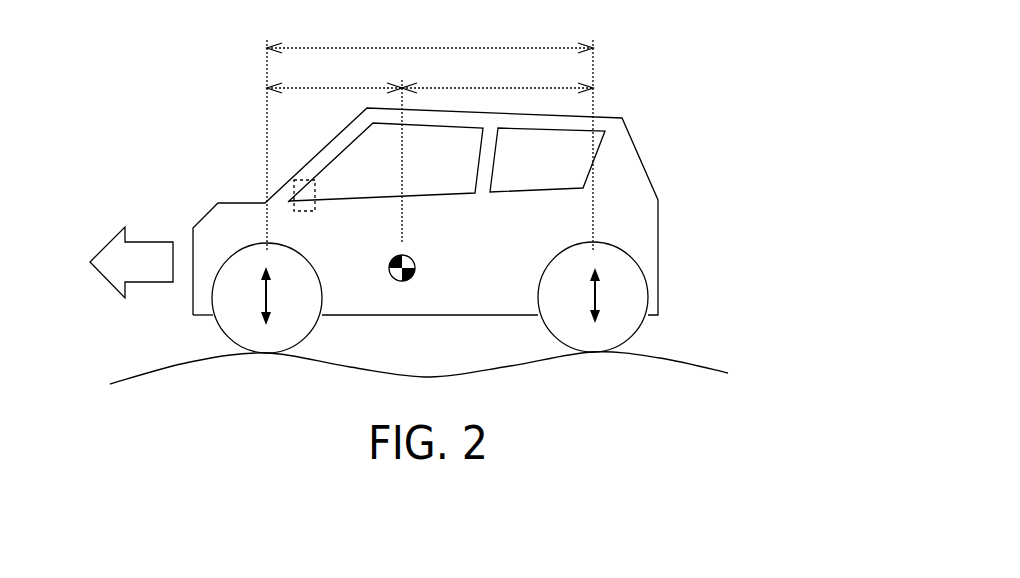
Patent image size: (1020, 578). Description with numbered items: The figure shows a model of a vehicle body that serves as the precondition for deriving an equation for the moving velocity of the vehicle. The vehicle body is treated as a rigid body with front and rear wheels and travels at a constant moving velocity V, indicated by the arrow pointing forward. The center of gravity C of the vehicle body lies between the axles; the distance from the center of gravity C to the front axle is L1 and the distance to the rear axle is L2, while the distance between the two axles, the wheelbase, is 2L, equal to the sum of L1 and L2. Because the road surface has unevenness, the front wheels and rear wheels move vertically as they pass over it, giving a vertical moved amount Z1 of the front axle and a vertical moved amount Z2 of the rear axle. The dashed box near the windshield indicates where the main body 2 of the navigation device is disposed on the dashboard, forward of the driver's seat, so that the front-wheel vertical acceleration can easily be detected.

The main body 2 is at (303, 164).
The center of gravity C is at (425, 263).
The moving velocity V is at (131, 262).
The vertical moved amount of the axle of the front wheels Z1 is at (267, 298).
The vertical moved amount of the axle of the rear wheels Z2 is at (593, 297).
The distance from the center of gravity to the axle of the front wheels L1 is at (334, 72).
The distance from the center of gravity to the axle of the rear wheels L2 is at (497, 72).
The wheelbase 2L is at (430, 32).